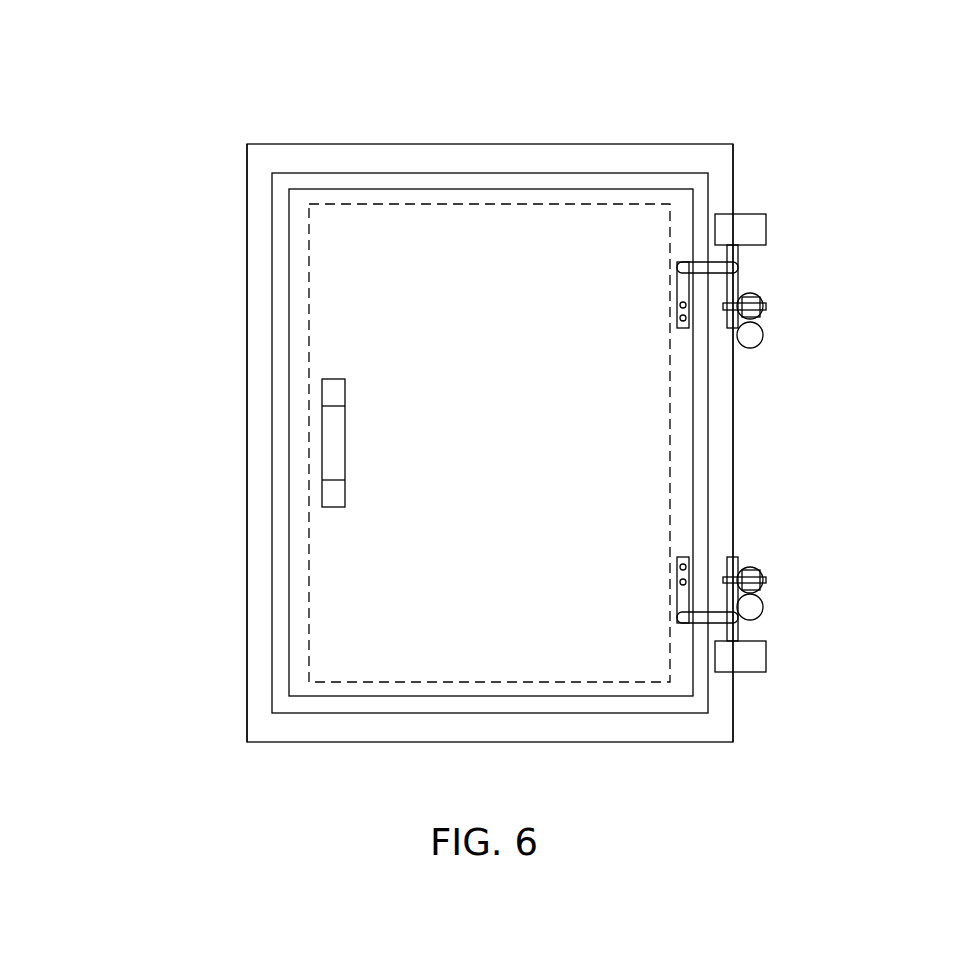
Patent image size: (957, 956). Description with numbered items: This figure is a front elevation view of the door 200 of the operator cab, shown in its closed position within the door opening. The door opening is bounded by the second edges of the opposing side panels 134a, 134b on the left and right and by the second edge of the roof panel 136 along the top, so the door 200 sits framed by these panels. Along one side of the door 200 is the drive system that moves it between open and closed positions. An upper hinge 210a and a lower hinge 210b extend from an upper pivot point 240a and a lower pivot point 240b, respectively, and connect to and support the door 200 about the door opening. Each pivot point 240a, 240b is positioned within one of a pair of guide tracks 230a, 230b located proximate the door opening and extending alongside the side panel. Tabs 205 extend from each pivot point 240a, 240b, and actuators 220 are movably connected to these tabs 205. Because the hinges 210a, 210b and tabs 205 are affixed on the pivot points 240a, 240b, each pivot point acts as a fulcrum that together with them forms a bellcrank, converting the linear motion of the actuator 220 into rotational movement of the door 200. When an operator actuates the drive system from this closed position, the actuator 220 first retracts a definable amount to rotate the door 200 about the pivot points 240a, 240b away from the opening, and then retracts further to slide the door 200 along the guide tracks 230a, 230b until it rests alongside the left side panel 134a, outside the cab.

The left side panel 134a is at (733, 166).
The right side panel 134b is at (247, 317).
The roof panel 136 is at (537, 144).
The door 200 is at (407, 277).
The upper hinge 210a is at (683, 328).
The lower hinge 210b is at (683, 557).
The actuator 220 is at (765, 295).
The tab 205 is at (767, 306).
The upper guide track 230a is at (753, 228).
The lower guide track 230b is at (753, 658).
The upper pivot point 240a is at (743, 327).
The lower pivot point 240b is at (734, 565).